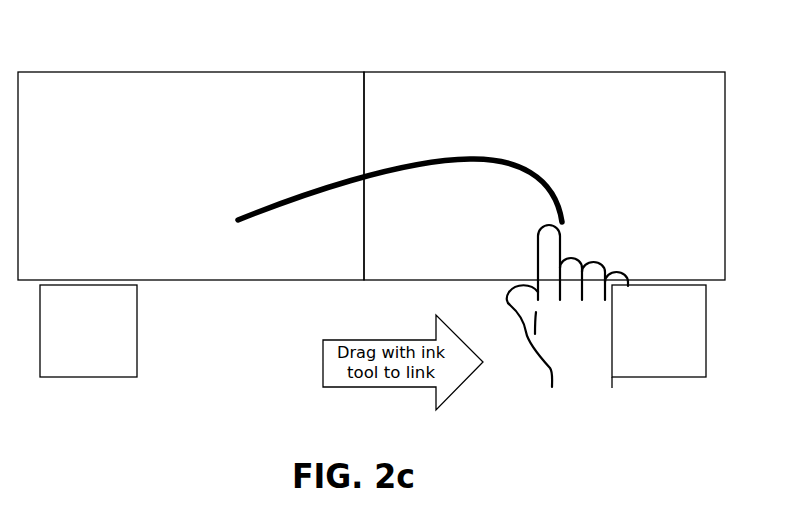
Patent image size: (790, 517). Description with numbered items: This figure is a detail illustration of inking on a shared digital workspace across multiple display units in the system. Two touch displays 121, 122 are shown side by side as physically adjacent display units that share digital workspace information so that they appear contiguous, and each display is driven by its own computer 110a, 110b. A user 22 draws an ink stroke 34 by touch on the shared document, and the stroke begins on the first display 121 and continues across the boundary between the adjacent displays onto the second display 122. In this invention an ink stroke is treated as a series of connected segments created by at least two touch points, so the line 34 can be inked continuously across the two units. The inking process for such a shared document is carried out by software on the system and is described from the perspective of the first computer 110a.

The touch display 121 is at (204, 87).
The touch display 122 is at (463, 85).
The ink stroke 34 is at (293, 210).
The user 22 is at (560, 358).
The computer 110a is at (100, 365).
The computer 110b is at (650, 365).